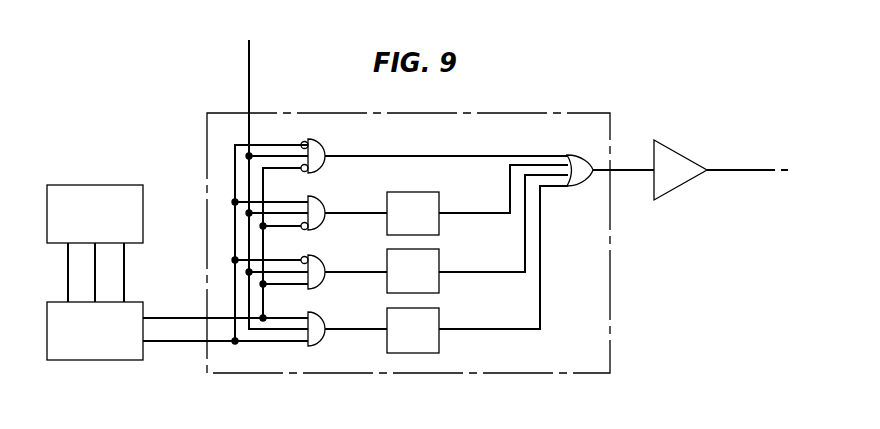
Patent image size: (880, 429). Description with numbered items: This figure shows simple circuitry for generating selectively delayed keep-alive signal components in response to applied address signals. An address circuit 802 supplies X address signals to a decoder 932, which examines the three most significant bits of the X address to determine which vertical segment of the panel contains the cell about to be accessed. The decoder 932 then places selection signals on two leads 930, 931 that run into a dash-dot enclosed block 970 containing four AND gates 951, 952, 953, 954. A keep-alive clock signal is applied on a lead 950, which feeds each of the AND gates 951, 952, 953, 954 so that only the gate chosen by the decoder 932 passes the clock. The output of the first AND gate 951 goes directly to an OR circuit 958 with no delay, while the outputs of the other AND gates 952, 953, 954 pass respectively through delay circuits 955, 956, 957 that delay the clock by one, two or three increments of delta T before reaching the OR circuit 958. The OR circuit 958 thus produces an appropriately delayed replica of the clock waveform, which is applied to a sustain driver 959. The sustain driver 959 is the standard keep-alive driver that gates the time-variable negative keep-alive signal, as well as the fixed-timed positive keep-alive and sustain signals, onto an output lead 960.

The address circuit 802 is at (118, 185).
The lead 930 is at (182, 317).
The lead 931 is at (172, 342).
The decoder 932 is at (105, 357).
The lead 950 is at (250, 63).
The AND gate 951 is at (317, 146).
The AND gate 952 is at (317, 203).
The AND gate 953 is at (317, 262).
The AND gate 954 is at (317, 319).
The delay circuit 955 is at (436, 200).
The delay circuit 956 is at (436, 258).
The delay circuit 957 is at (436, 316).
The OR circuit 958 is at (583, 179).
The sustain driver 959 is at (670, 157).
The lead 960 is at (745, 168).
The delay selection circuit 970 is at (540, 113).